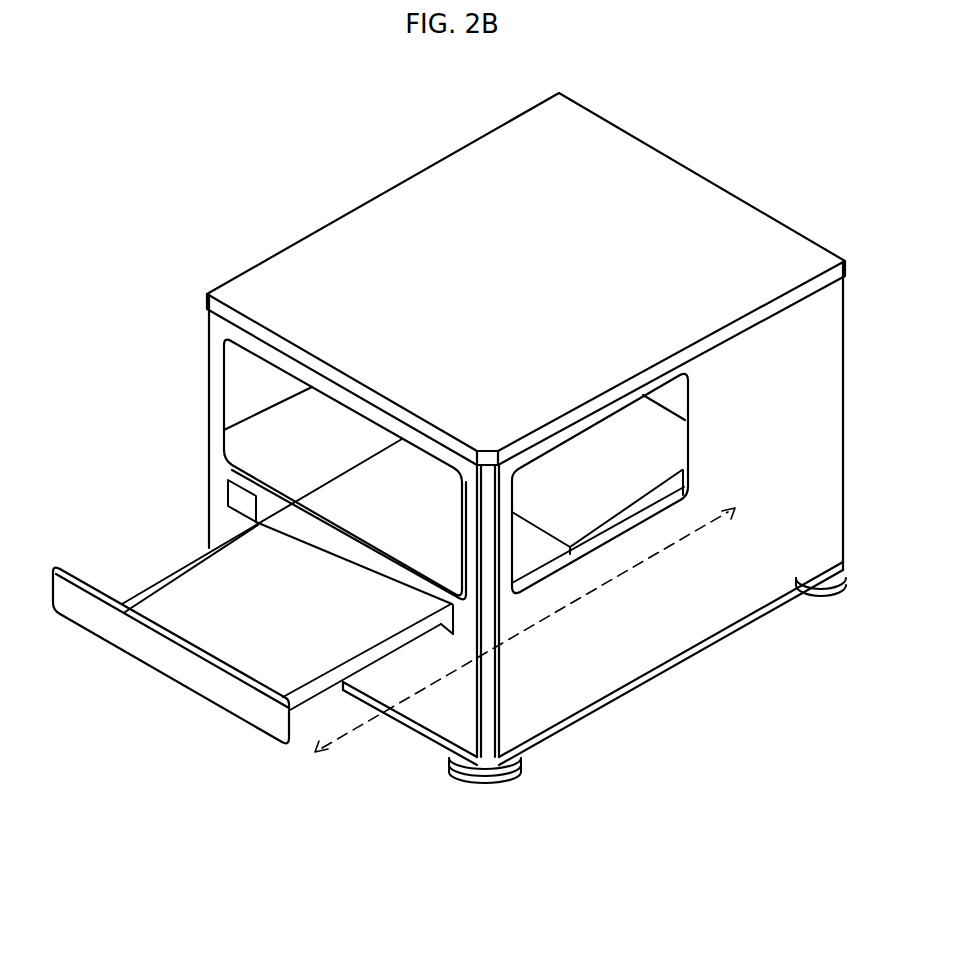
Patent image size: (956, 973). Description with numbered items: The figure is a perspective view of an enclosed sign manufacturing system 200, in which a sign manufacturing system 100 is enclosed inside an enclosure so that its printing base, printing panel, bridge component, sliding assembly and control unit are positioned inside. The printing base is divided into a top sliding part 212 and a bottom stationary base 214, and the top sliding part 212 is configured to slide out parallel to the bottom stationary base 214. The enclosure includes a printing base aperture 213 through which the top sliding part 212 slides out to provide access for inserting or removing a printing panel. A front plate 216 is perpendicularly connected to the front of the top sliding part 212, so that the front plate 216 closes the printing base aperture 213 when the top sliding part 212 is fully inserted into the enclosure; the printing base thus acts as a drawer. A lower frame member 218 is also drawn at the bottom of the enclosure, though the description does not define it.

The enclosed sign manufacturing system 200 is at (240, 212).
The sign manufacturing system 100 is at (620, 438).
The top sliding part 212 is at (143, 580).
The printing base aperture 213 is at (240, 497).
The bottom stationary base 214 is at (620, 523).
The front plate 216 is at (222, 688).
The bottom frame bar 218 is at (370, 727).